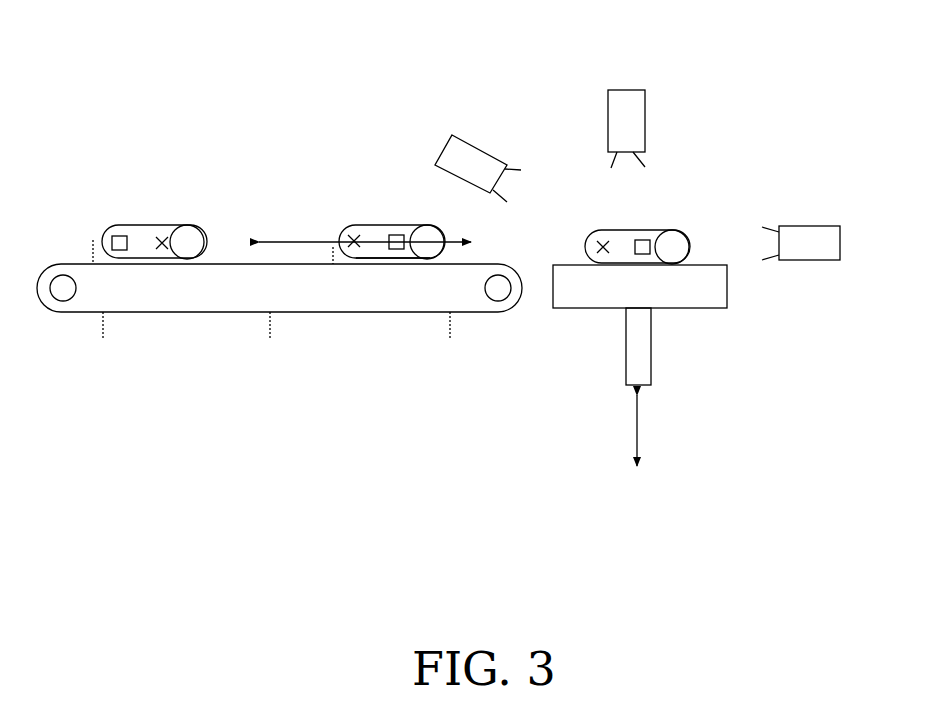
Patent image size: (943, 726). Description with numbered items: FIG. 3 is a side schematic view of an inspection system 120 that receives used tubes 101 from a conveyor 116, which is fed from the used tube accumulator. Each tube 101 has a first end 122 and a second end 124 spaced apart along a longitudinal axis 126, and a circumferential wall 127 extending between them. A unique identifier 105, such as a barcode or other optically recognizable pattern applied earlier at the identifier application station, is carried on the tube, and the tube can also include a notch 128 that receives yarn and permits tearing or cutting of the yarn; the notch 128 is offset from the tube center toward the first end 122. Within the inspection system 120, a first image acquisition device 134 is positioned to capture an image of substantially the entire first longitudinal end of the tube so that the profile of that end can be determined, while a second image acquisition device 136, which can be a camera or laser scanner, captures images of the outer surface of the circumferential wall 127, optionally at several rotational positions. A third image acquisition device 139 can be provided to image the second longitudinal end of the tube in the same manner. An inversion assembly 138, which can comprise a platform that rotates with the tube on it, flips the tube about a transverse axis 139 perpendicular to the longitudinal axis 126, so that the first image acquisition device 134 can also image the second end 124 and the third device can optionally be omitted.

The tube 101 is at (105, 236).
The unique identifier 105 is at (110, 232).
The conveyor 116 is at (238, 288).
The inspection system 120 is at (500, 58).
The first end 122 is at (380, 251).
The second end 124 is at (437, 245).
The longitudinal axis 126 is at (283, 240).
The circumferential wall 127 is at (363, 257).
The notch 128 is at (161, 238).
The first image acquisition device 134 is at (807, 225).
The second image acquisition device 136 is at (608, 112).
The inversion assembly 138 is at (637, 350).
The third image acquisition device / transverse axis 139 is at (446, 145).